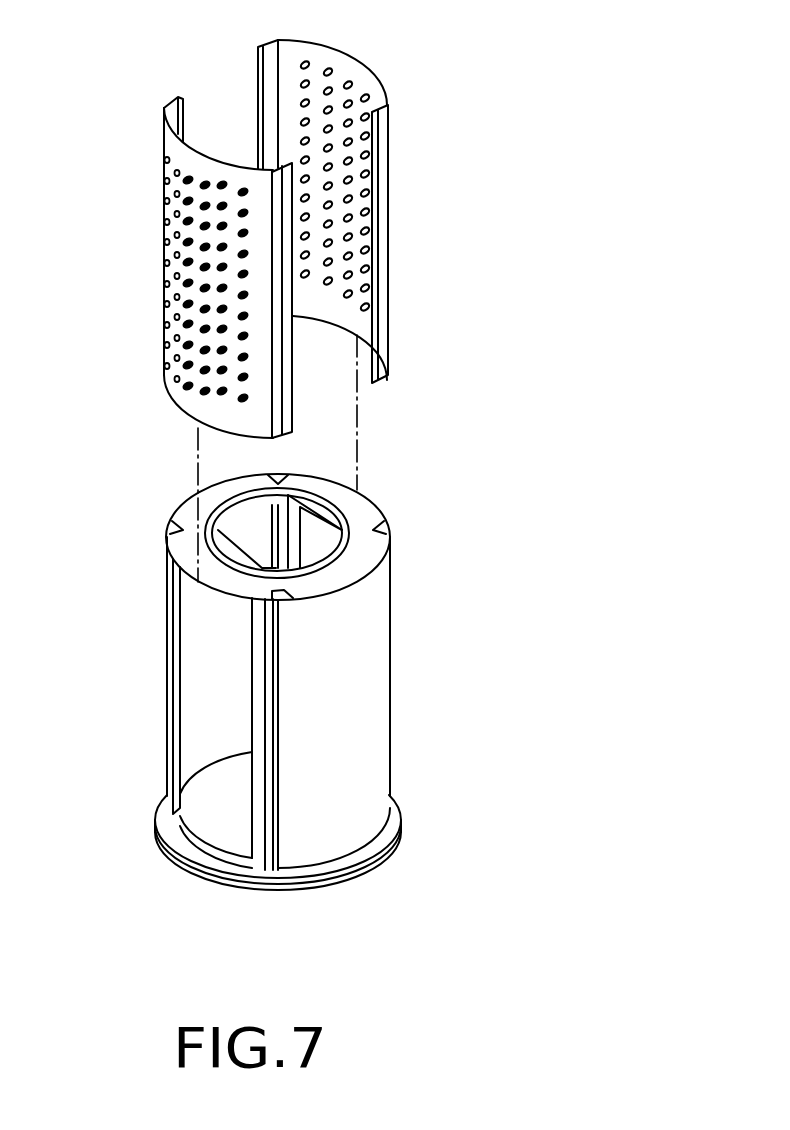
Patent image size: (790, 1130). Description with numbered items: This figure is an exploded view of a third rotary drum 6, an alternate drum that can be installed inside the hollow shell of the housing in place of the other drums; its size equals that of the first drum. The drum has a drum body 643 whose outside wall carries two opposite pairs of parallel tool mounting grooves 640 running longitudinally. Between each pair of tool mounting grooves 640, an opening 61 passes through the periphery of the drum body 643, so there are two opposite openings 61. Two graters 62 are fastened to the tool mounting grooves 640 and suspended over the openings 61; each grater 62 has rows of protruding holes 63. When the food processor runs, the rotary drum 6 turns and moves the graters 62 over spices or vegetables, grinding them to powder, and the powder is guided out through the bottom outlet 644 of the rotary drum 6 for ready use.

The third rotary drum 6 is at (275, 717).
The opening 61 is at (190, 688).
The grater 62 is at (358, 69).
The protruding holes 63 is at (190, 238).
The tool mounting grooves 640 is at (373, 528).
The drum body 643 is at (370, 745).
The bottom outlet 644 is at (227, 828).